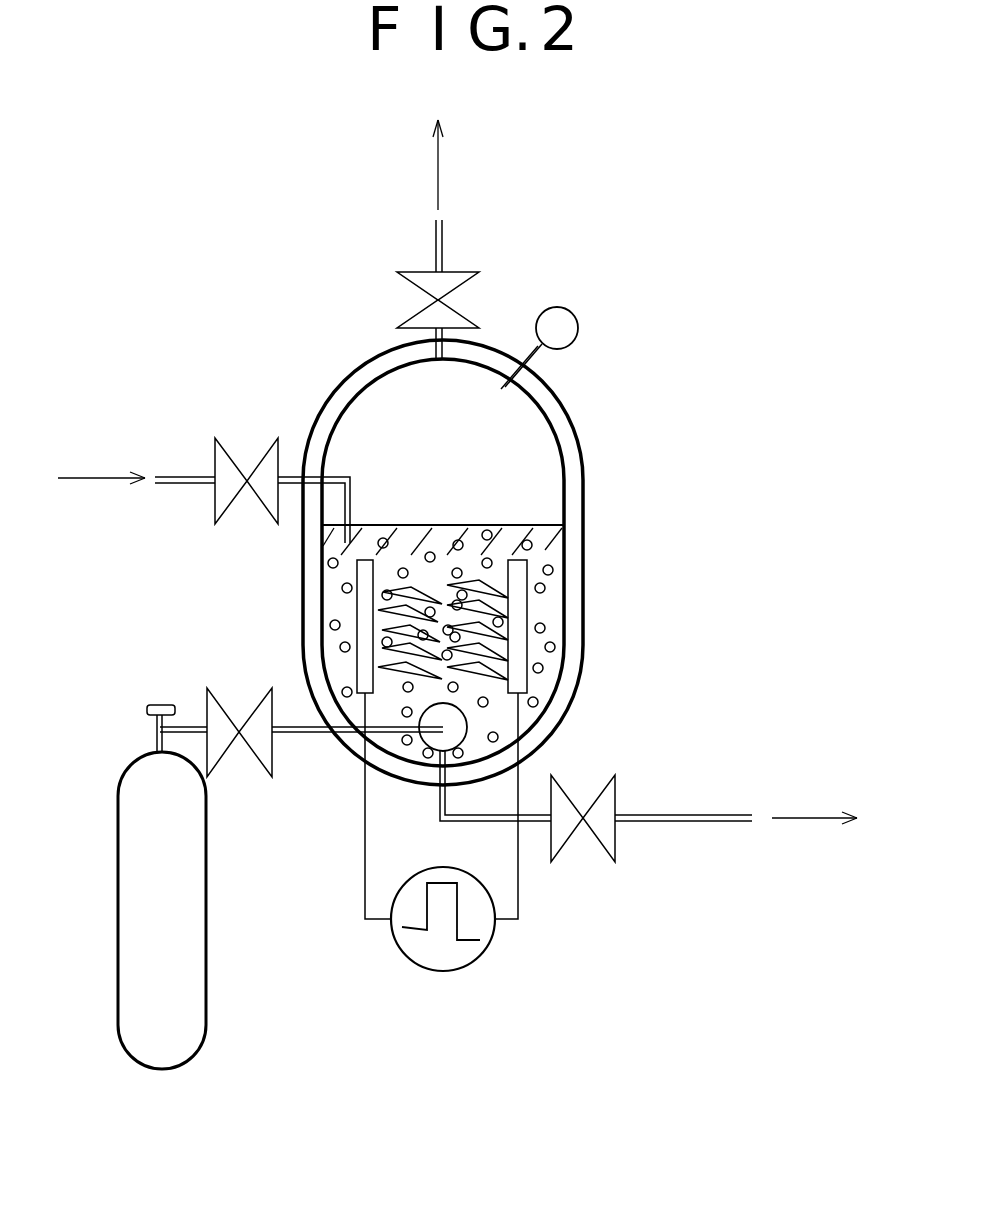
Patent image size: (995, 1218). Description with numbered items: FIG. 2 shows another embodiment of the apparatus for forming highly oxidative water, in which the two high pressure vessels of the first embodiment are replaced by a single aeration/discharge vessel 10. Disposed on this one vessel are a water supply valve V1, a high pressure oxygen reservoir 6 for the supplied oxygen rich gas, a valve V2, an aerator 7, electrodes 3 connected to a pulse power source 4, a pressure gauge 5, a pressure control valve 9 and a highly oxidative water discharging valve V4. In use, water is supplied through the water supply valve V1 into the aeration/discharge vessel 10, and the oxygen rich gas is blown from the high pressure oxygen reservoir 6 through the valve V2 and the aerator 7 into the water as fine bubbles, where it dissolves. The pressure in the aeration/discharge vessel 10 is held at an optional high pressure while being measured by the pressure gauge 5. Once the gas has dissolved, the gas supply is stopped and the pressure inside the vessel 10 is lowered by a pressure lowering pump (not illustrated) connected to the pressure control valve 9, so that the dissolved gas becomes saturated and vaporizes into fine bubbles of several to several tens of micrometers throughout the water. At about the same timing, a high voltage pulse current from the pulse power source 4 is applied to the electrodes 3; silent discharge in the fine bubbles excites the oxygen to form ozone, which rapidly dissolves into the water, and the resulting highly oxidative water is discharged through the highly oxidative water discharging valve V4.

The electrodes 3 is at (362, 610).
The pulse power source 4 is at (438, 957).
The pressure gauge 5 is at (568, 328).
The high pressure oxygen reservoir 6 is at (177, 920).
The aerator 7 is at (422, 743).
The pressure control valve 9 is at (443, 302).
The aeration/discharge vessel 10 is at (587, 443).
The water supply valve V1 is at (245, 476).
The valve V2 is at (238, 722).
The highly oxidative water discharging valve V4 is at (582, 823).